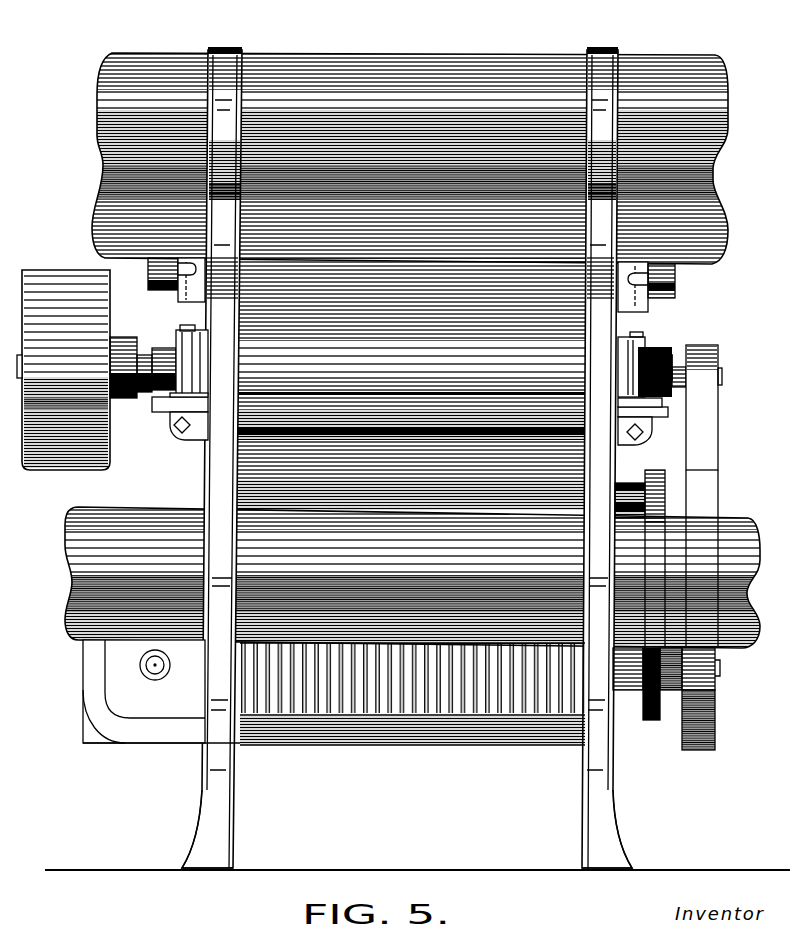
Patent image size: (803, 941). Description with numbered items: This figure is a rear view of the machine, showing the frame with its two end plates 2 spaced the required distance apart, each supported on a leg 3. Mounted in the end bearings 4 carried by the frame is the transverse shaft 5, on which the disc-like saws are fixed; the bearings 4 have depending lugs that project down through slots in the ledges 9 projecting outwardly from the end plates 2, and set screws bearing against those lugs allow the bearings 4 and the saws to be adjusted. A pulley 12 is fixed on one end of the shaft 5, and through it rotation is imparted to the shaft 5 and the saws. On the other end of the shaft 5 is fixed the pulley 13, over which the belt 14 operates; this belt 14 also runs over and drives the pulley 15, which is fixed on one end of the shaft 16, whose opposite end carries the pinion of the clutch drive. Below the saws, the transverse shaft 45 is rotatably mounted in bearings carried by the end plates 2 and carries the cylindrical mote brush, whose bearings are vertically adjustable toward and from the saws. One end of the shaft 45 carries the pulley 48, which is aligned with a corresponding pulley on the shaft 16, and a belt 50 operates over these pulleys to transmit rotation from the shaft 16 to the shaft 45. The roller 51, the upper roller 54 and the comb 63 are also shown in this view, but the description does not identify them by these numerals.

The end plate 2 is at (212, 460).
The leg 3 is at (196, 826).
The end bearing 4 is at (164, 348).
The transverse shaft 5 is at (145, 355).
The ledge 9 is at (165, 405).
The pulley 12 is at (60, 470).
The pulley 13 is at (686, 410).
The belt 14 is at (708, 473).
The pulley 15 is at (716, 694).
The shaft 16 is at (720, 668).
The transverse shaft 45 is at (623, 483).
The pulley 48 is at (655, 522).
The belt 50 is at (648, 722).
The lower roller 51 is at (740, 553).
The upper roller 54 is at (680, 68).
The comb 63 is at (256, 685).